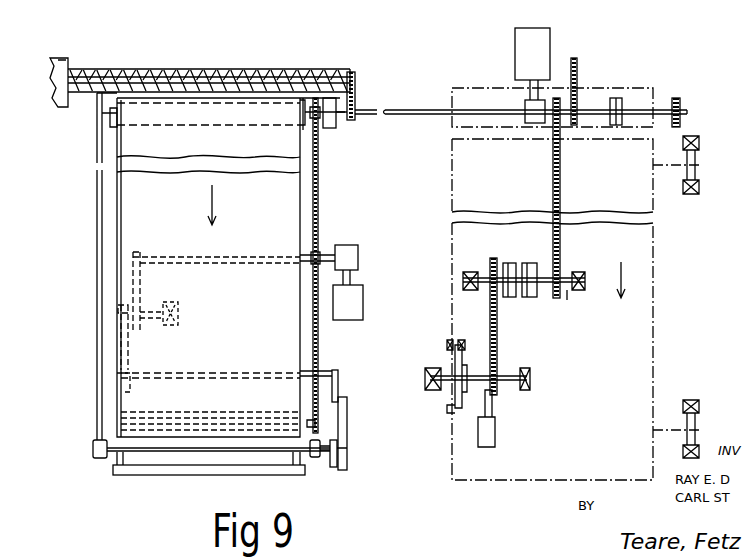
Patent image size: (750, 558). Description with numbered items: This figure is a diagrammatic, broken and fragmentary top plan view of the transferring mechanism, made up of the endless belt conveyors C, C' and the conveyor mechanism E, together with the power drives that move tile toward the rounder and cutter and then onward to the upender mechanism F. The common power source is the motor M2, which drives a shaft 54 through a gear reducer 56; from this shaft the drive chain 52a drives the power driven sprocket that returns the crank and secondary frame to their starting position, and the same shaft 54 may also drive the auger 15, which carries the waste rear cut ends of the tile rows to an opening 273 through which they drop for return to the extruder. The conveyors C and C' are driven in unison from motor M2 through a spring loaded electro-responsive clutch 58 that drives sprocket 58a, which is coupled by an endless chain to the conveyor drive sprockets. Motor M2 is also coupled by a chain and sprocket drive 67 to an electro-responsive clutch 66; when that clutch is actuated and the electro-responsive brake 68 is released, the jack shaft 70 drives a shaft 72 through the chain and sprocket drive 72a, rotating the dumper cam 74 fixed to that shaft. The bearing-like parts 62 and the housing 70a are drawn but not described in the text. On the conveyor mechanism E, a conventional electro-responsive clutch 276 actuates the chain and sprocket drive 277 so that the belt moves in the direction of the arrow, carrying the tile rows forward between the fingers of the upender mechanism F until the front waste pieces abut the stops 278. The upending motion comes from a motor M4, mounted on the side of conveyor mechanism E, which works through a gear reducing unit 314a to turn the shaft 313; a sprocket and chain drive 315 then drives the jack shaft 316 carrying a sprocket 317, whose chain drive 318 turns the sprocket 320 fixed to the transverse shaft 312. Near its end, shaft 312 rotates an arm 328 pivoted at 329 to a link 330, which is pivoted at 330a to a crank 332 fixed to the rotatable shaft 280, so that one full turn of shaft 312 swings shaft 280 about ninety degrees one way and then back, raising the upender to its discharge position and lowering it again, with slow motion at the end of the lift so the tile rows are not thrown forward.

The opening 273 is at (63, 58).
The auger 15 is at (250, 66).
The shaft 54 is at (403, 108).
The electro-responsive clutch 276 is at (338, 122).
The chain and sprocket drive 277 is at (318, 206).
The stops 278 is at (320, 345).
The gear reducing unit 314a is at (355, 248).
The motor M4 is at (358, 293).
The shaft 312 is at (247, 370).
The shaft 313 is at (165, 255).
The sprocket and chain drive 315 is at (142, 296).
The jack shaft 316 is at (157, 322).
The sprocket 317 is at (118, 307).
The chain drive 318 is at (128, 343).
The sprocket 320 is at (118, 388).
The conveyor mechanism E is at (108, 214).
The upender mechanism F is at (186, 487).
The rotatable shaft 280 is at (284, 452).
The arm 328 is at (340, 386).
The pivot 329 is at (348, 399).
The link 330 is at (352, 446).
The crank 332 is at (333, 462).
The pivot 330a is at (342, 470).
The motor M2 is at (548, 40).
The gear reducer 56 is at (529, 106).
The drive chain 52a is at (577, 62).
The endless belt conveyor C is at (560, 127).
The electro-responsive clutch 58 is at (618, 100).
The jack shaft 70 is at (655, 96).
The sprocket 58a is at (682, 100).
The bearing 62 is at (700, 141).
The electro-responsive brake 68 is at (507, 263).
The electro-responsive clutch 66 is at (528, 263).
The chain and sprocket drive 67 is at (561, 258).
The endless belt conveyor C' is at (573, 351).
The housing 70a is at (640, 368).
The chain and sprocket drive 72a is at (498, 345).
The shaft 72 is at (505, 374).
The dumper cam 74 is at (463, 363).